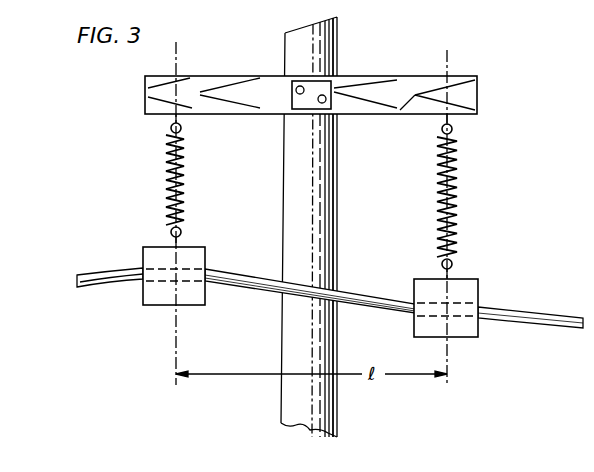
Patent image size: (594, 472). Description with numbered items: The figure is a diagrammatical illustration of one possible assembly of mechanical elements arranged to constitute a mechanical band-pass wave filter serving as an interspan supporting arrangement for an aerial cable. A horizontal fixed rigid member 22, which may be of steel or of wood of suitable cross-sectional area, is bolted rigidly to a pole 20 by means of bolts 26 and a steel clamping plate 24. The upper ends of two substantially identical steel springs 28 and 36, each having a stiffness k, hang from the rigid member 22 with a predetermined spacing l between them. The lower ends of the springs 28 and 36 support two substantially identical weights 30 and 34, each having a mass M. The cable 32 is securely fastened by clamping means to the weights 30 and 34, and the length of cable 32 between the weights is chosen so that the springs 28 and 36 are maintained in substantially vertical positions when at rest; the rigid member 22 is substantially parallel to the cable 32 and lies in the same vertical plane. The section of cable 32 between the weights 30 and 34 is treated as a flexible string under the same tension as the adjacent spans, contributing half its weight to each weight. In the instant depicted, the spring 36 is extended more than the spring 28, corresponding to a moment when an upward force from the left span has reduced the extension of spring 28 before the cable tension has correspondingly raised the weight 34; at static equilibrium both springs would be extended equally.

The pole 20 is at (337, 190).
The fixed rigid member 22 is at (225, 76).
The steel clamping plate 24 is at (332, 86).
The bolts 26 is at (321, 95).
The steel spring 28 is at (186, 178).
The weight 30 is at (188, 306).
The cable 32 is at (99, 272).
The weight 34 is at (458, 338).
The steel spring 36 is at (456, 207).